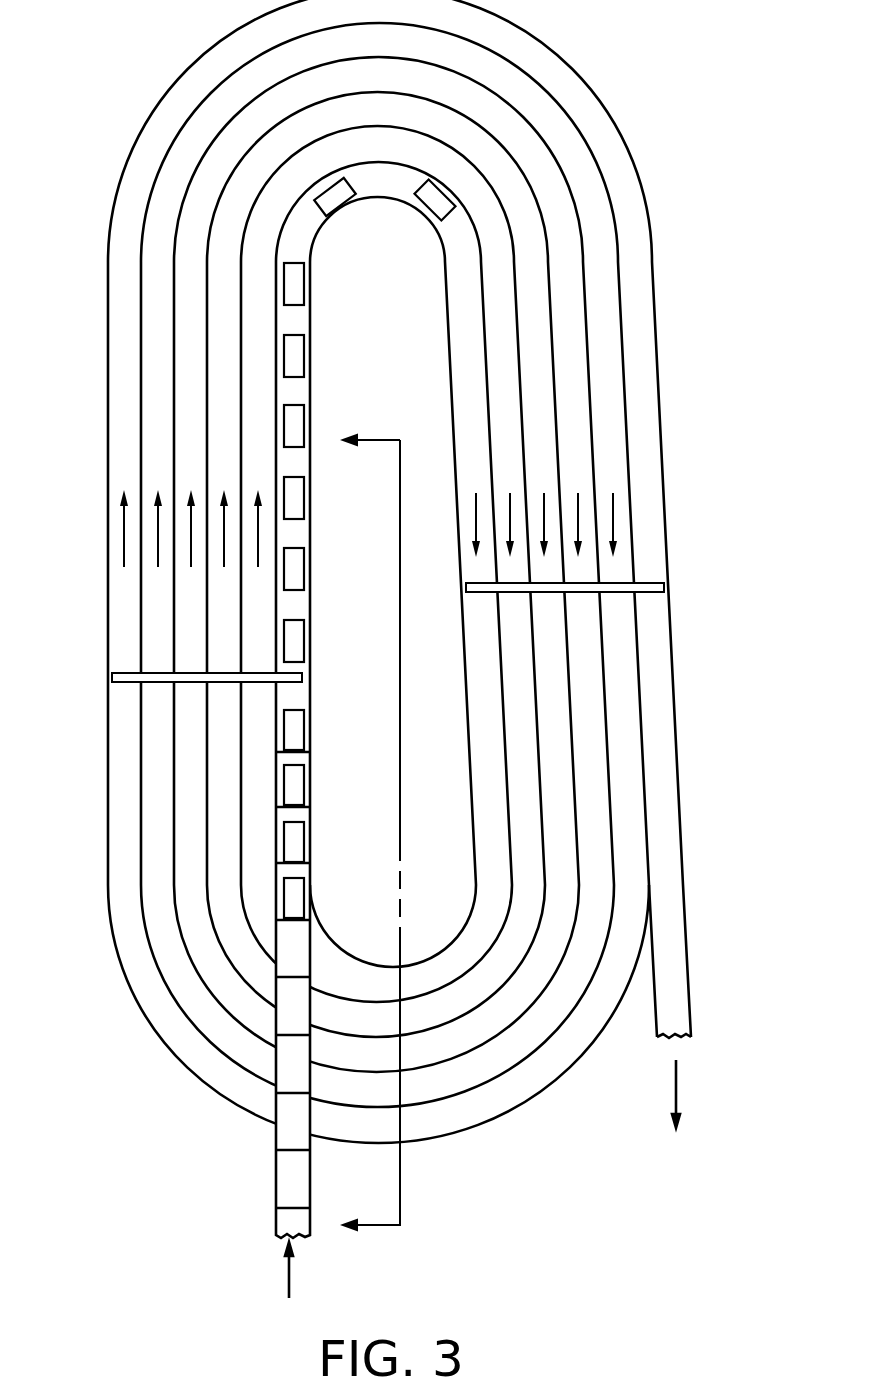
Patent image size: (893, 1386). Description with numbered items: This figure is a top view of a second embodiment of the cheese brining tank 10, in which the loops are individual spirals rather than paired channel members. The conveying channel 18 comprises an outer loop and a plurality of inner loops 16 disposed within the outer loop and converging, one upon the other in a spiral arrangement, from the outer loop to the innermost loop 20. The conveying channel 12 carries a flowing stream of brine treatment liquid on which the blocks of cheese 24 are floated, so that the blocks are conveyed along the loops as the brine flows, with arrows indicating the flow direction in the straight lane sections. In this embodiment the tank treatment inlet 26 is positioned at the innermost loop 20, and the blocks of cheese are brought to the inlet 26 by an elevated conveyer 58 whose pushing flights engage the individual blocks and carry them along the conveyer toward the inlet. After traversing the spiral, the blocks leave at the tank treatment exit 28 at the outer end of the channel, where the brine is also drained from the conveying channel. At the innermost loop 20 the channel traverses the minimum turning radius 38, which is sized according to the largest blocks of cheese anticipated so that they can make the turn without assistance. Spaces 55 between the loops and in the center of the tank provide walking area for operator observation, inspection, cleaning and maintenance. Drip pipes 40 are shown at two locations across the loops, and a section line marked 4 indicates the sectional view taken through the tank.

The tank 10 is at (400, 649).
The conveying channel 12 is at (486, 786).
The loops 16 is at (128, 767).
The conveying channel 18 is at (640, 372).
The innermost loop 20 is at (485, 730).
The blocks of cheese 24 is at (285, 740).
The tank treatment inlet 26 is at (300, 690).
The tank treatment exit 28 is at (692, 1037).
The minimum turning radius 38 is at (367, 207).
The drip pipes 40 is at (157, 673).
The spaces 55 is at (392, 397).
The elevated conveyer 58 is at (282, 1129).
The section line 4- 4 is at (371, 848).